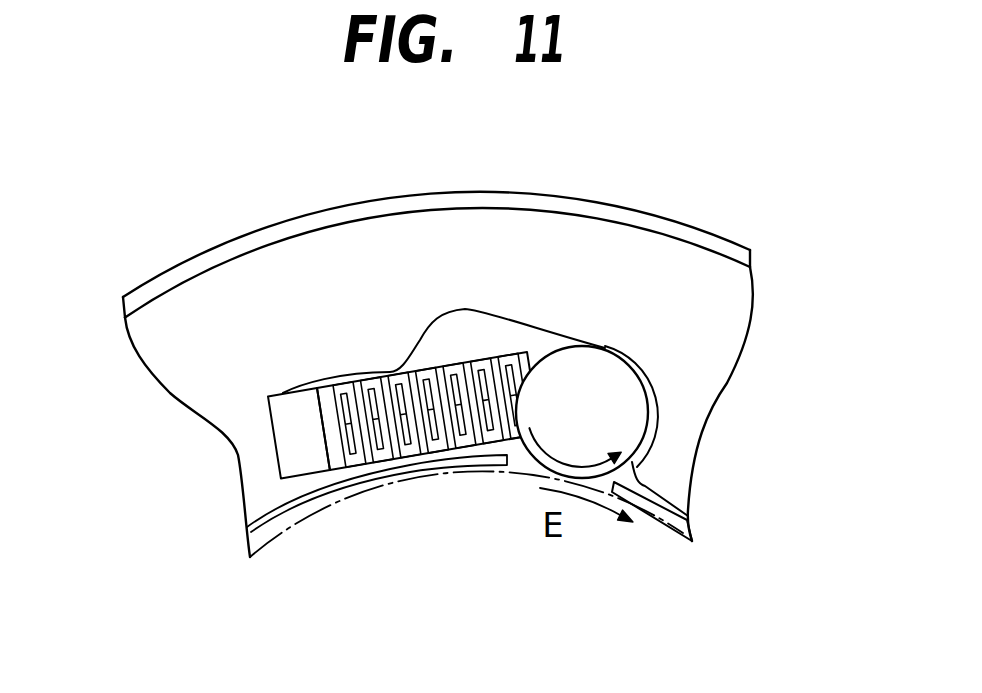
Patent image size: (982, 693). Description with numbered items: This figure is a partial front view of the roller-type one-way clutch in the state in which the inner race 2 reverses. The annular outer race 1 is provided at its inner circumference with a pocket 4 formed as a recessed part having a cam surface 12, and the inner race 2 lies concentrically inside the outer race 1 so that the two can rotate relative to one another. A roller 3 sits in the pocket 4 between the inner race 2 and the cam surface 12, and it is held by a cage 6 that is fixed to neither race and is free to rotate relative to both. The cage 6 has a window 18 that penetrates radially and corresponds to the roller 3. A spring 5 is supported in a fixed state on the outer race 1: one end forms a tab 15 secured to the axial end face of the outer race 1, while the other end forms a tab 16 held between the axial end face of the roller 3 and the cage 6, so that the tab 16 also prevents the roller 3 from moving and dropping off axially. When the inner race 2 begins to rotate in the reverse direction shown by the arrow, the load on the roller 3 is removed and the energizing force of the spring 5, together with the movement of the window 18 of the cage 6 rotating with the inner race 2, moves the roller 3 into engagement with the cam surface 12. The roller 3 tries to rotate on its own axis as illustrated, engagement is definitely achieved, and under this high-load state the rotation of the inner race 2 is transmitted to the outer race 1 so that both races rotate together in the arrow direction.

The outer race 1 is at (215, 307).
The inner race 2 is at (312, 568).
The roller 3 is at (587, 367).
The pocket 4 is at (471, 317).
The spring 5 is at (377, 380).
The cage 6 is at (677, 515).
The cam surface 12 is at (622, 357).
The tab 15 is at (290, 437).
The tab 16 is at (517, 363).
The window 18 is at (492, 456).